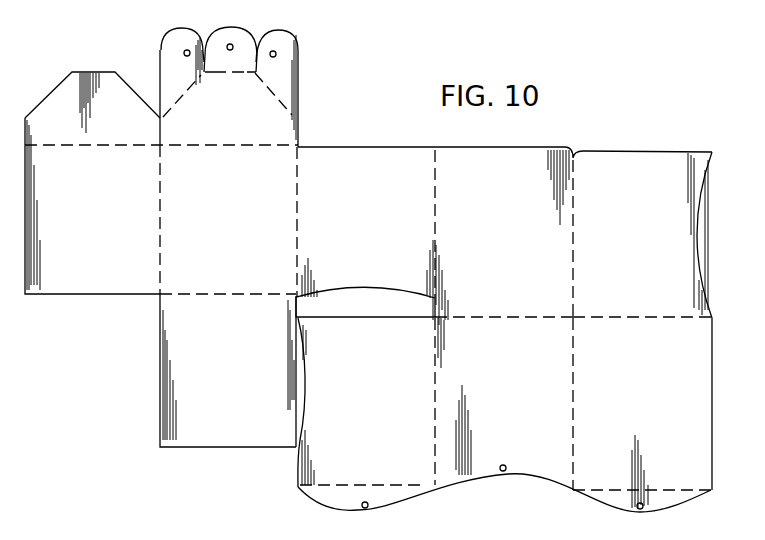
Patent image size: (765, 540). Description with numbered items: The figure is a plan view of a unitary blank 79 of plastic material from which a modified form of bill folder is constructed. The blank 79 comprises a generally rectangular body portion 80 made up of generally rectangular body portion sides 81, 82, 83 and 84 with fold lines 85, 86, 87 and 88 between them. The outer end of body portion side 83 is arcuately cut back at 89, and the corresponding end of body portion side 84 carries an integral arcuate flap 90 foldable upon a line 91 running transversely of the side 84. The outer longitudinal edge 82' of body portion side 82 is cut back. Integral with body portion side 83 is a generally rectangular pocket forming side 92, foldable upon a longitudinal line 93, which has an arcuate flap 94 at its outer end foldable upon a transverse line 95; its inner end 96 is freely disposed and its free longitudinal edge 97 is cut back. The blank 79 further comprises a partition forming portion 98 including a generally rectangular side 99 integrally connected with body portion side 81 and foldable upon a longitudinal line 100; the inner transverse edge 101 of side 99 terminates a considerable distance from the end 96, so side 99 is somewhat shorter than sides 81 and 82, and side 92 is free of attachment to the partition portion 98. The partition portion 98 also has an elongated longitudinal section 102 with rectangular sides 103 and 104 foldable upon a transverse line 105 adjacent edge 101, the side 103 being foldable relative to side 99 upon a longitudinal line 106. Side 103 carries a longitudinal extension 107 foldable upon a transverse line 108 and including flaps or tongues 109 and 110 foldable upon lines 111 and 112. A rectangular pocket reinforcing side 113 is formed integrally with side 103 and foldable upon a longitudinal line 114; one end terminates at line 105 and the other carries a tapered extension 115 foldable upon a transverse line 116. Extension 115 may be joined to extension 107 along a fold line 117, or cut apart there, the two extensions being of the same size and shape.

The unitary blank 79 is at (513, 148).
The body portion 80 is at (647, 165).
The body portion side 81 is at (511, 239).
The body portion side 82 is at (637, 234).
The outer longitudinal edge 82' is at (715, 321).
The body portion side 83 is at (504, 397).
The body portion side 84 is at (644, 402).
The fold line 85 is at (503, 316).
The fold line 86 is at (575, 278).
The fold line 87 is at (630, 320).
The fold line 88 is at (573, 438).
The arcuate cut back 89 is at (468, 477).
The arcuate flap 90 is at (677, 502).
The fold line 91 is at (686, 489).
The pocket forming side 92 is at (364, 389).
The fold line 93 is at (433, 353).
The arcuate flap 94 is at (345, 504).
The fold line 95 is at (405, 486).
The inner end 96 is at (357, 318).
The free longitudinal edge 97 is at (306, 422).
The partition forming portion 98 is at (300, 135).
The partition side 99 is at (368, 225).
The fold line 100 is at (437, 193).
The inner transverse edge 101 is at (367, 290).
The longitudinal section 102 is at (185, 284).
The partition side 103 is at (230, 229).
The partition side 104 is at (234, 365).
The fold line 105 is at (221, 293).
The fold line 106 is at (297, 192).
The longitudinal extension 107 is at (256, 117).
The fold line 108 is at (222, 150).
The flap or tongue 109 is at (163, 50).
The flap or tongue 110 is at (238, 32).
The fold line 111 is at (180, 100).
The fold line 112 is at (215, 74).
The pocket reinforcing side 113 is at (92, 225).
The fold line 114 is at (160, 245).
The tapered extension 115 is at (62, 96).
The fold line 116 is at (70, 148).
The fold line 117 is at (160, 130).